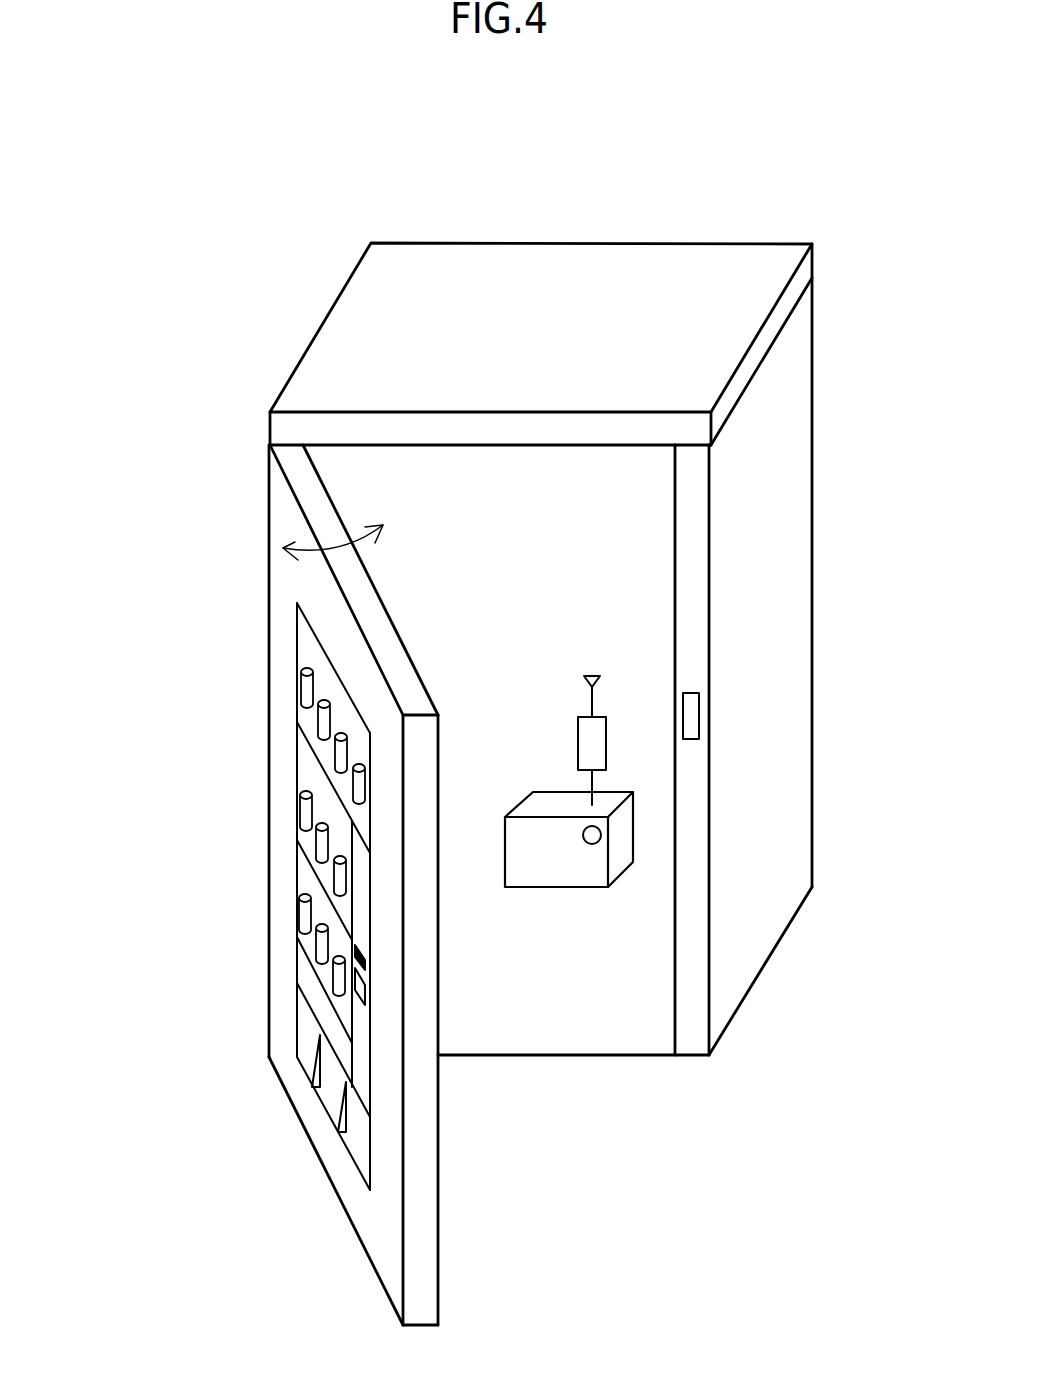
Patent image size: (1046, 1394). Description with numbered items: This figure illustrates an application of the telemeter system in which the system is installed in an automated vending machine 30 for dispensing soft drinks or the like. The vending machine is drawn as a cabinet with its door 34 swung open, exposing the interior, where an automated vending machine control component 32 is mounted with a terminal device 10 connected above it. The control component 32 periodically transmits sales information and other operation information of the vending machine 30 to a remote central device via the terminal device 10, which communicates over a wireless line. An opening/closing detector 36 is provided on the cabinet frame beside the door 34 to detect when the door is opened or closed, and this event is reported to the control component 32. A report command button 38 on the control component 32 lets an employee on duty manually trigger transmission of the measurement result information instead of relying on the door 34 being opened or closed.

The automated vending machine 30 is at (677, 243).
The door 34 is at (378, 628).
The opening/closing detector 36 is at (699, 715).
The terminal device 10 is at (592, 742).
The automated vending machine control component 32 is at (533, 865).
The report command button 38 is at (586, 846).